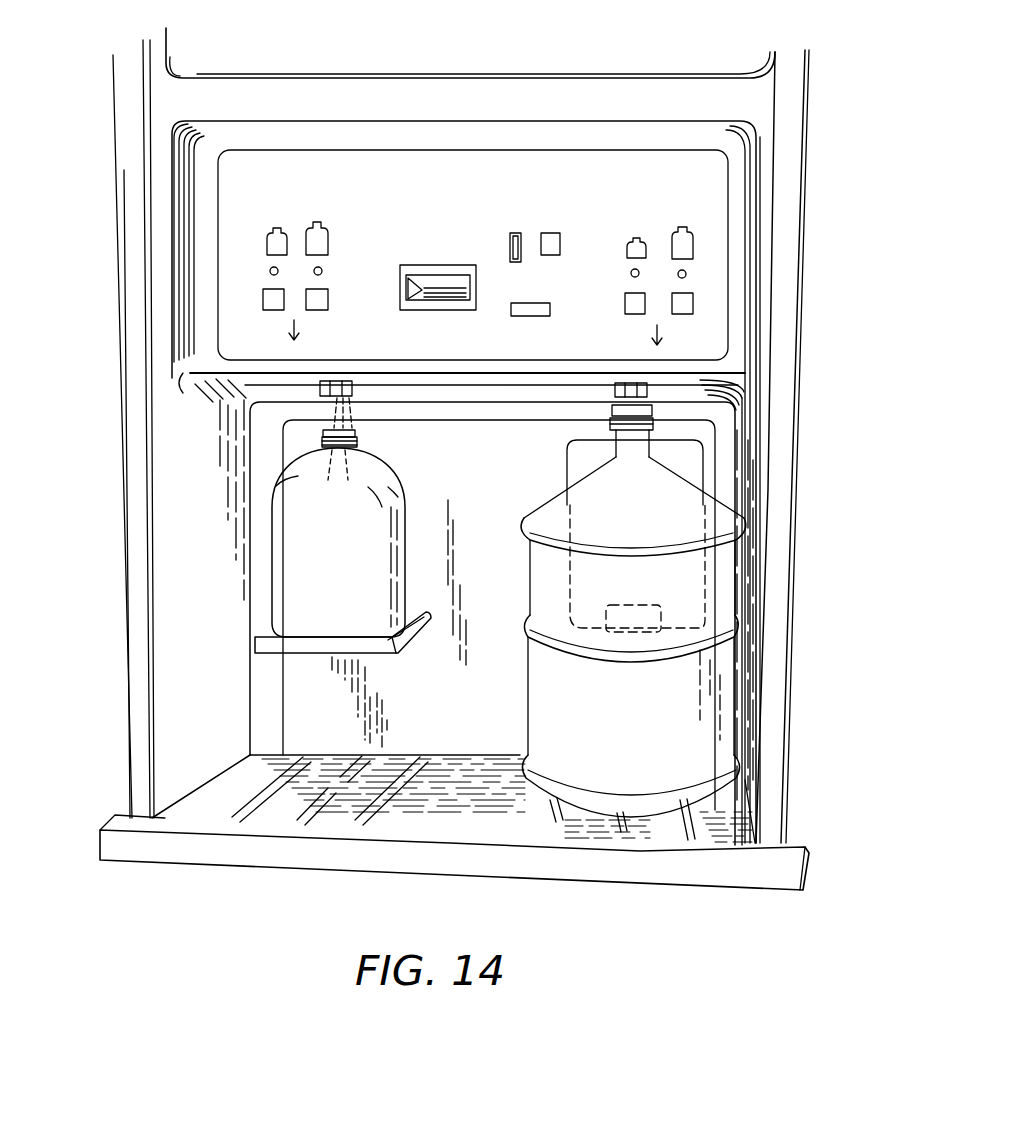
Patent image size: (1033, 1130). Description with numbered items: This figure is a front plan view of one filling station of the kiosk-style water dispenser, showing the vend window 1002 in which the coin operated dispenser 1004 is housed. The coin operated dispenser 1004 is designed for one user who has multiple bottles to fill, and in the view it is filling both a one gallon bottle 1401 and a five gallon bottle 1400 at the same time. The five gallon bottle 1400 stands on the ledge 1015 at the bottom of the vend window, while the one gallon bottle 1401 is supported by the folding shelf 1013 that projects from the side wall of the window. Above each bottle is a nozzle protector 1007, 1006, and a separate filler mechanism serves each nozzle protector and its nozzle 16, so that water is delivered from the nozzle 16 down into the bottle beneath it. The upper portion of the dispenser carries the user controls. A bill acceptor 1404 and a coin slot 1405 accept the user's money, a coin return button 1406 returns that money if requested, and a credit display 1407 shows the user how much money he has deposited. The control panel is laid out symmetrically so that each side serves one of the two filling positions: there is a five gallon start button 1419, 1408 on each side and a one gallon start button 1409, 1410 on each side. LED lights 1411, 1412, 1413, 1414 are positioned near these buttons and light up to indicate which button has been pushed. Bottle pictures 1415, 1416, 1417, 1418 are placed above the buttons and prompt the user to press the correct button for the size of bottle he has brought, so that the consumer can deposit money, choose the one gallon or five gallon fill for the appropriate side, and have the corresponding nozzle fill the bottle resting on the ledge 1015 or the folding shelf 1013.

The coin-operated dispenser 1004 is at (603, 187).
The vend window 1002 is at (746, 575).
The ledge 1015 is at (700, 848).
The five gallon bottle 1400 is at (700, 718).
The one gallon bottle 1401 is at (292, 545).
The folding shelf 1013 is at (285, 660).
The nozzle protector 1007 is at (320, 388).
The nozzle protector 1006 is at (648, 390).
The nozzle 16 is at (333, 398).
The bill acceptor 1404 is at (407, 265).
The coin slot 1405 is at (511, 240).
The coin return button 1406 is at (545, 234).
The credit display 1407 is at (530, 318).
The five gallon start button 1408 is at (330, 308).
The one gallon start button 1409 is at (262, 297).
The one gallon start button 1410 is at (628, 313).
The five gallon start button 1419 is at (694, 307).
The LED light 1411 is at (270, 271).
The LED light 1412 is at (314, 271).
The LED light 1413 is at (640, 270).
The LED light 1414 is at (686, 275).
The bottle picture 1415 is at (267, 240).
The bottle picture 1416 is at (326, 228).
The bottle picture 1417 is at (636, 242).
The bottle picture 1418 is at (694, 236).